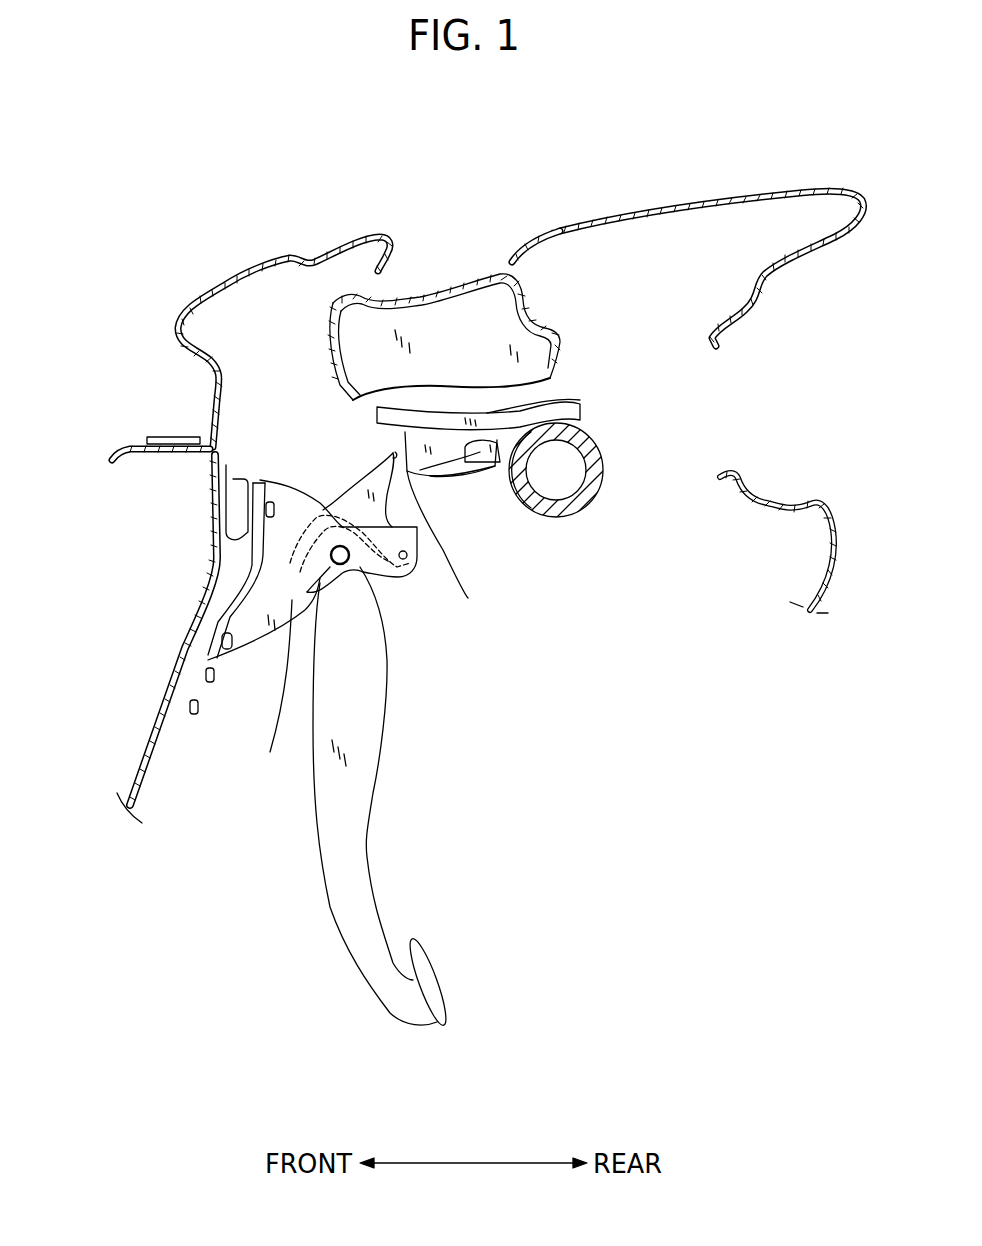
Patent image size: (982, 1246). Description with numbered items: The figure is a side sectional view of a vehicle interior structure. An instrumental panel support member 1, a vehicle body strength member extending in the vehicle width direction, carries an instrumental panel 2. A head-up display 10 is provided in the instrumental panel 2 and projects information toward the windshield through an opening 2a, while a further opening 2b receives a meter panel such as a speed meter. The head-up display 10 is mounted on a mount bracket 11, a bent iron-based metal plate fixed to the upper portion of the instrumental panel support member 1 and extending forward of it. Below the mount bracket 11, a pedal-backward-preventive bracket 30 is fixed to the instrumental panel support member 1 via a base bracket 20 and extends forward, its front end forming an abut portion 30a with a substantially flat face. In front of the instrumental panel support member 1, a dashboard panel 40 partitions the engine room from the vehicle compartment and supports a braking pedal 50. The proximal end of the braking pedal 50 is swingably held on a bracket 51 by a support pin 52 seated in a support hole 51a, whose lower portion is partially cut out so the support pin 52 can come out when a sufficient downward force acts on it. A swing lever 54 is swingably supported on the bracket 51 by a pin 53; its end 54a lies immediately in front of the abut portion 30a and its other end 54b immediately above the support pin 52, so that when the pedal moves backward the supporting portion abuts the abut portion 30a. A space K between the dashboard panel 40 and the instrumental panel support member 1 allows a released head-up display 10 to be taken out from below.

The instrumental panel support member 1 is at (570, 523).
The instrumental panel 2 is at (652, 200).
The opening 2a is at (493, 250).
The opening 2b is at (722, 452).
The head-up display 10 is at (445, 318).
The mount bracket 11 is at (477, 417).
The base bracket 20 is at (490, 468).
The pedal-backward-preventive bracket 30 is at (460, 476).
The abut portion 30a is at (462, 548).
The dashboard panel 40 is at (143, 757).
The braking pedal 50 is at (360, 815).
The bracket 51 is at (262, 618).
The support hole 51a is at (352, 570).
The support pin 52 is at (272, 693).
The pin 53 is at (404, 560).
The swing lever 54 is at (340, 497).
The end of swing lever 54a is at (385, 457).
The other end of swing lever 54b is at (290, 563).
The space K is at (257, 403).